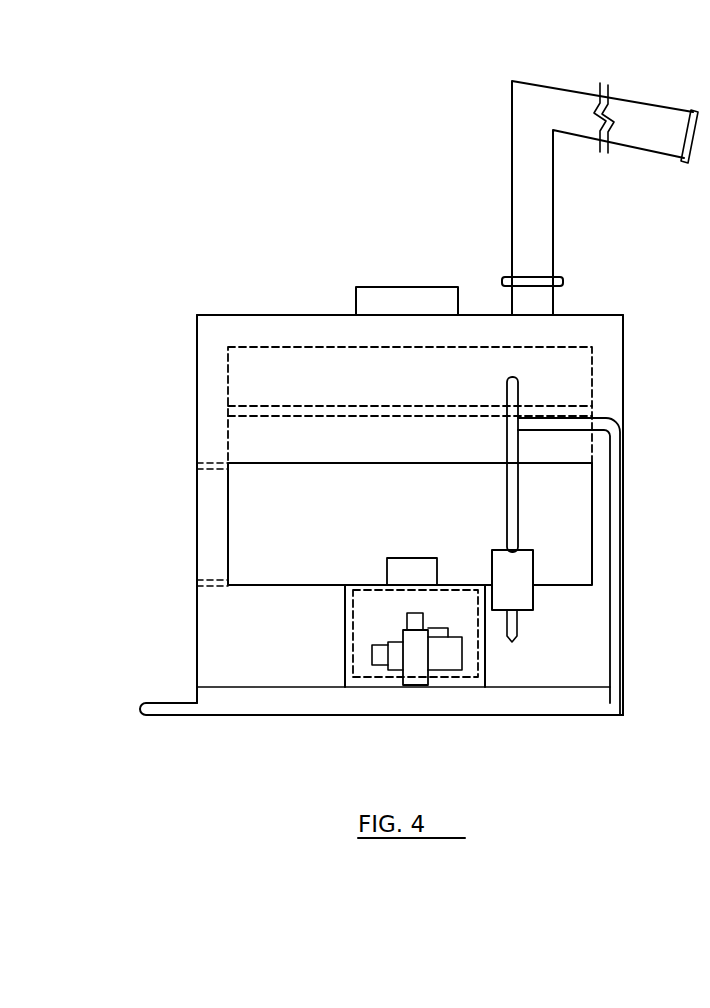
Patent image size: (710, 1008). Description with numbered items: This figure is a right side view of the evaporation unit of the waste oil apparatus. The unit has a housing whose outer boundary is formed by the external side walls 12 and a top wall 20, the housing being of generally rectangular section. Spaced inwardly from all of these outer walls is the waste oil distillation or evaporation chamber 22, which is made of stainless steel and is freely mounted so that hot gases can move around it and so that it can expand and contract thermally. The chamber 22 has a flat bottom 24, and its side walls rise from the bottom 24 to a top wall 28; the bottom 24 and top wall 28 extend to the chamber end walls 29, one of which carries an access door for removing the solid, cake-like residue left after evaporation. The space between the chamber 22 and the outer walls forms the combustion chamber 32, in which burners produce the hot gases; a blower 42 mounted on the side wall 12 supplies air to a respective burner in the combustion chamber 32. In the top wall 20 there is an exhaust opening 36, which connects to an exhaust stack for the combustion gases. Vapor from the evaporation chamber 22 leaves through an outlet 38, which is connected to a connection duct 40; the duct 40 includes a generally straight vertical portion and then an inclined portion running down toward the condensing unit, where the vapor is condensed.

The external side wall 12 is at (613, 367).
The top wall 20 is at (226, 314).
The waste oil distillation or evaporation chamber 22 is at (233, 529).
The flat bottom 24 is at (573, 587).
The top wall 28 is at (485, 322).
The chamber end wall 29 is at (228, 452).
The combustion chamber 32 is at (223, 613).
The exhaust opening 36 is at (402, 287).
The outlet 38 is at (548, 298).
The connection duct 40 is at (650, 153).
The blower 42 is at (417, 677).